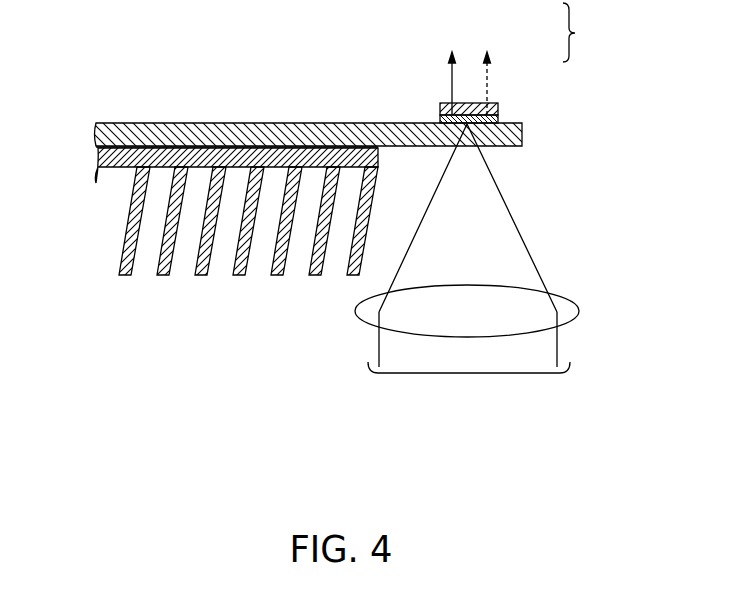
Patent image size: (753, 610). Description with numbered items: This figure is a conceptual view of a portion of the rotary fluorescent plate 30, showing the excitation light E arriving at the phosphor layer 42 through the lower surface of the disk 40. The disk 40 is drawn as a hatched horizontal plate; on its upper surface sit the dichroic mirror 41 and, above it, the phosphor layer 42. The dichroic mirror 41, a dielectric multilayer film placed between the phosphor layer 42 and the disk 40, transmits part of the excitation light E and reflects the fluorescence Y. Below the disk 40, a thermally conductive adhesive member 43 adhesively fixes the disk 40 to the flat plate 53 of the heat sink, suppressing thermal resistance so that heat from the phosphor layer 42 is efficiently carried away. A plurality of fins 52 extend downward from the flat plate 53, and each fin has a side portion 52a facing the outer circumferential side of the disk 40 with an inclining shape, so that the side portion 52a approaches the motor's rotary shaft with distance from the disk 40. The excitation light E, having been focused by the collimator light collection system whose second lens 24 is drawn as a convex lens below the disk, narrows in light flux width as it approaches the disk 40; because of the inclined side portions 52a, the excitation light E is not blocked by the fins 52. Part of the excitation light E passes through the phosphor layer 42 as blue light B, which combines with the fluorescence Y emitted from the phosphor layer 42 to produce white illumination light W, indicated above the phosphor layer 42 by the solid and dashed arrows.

The disk 40 is at (522, 135).
The thermally conductive adhesive member 43 is at (94, 147).
The flat plate 53 is at (97, 157).
The fins 52 is at (202, 276).
The side portion 52a is at (371, 217).
The phosphor layer 42 is at (440, 107).
The dichroic mirror 41 is at (440, 120).
The rotary fluorescent plate 30 is at (600, 84).
The second lens 24 is at (563, 318).
The blue light B is at (453, 70).
The fluorescence Y is at (488, 76).
The illumination light W is at (578, 32).
The excitation light E is at (467, 375).